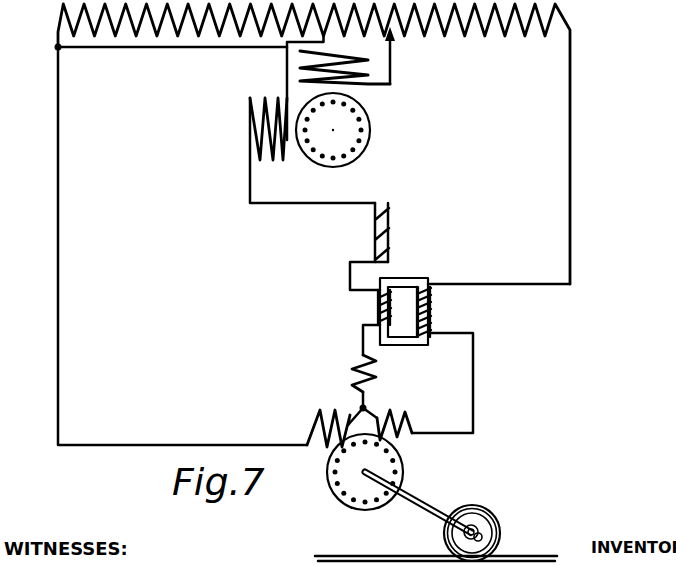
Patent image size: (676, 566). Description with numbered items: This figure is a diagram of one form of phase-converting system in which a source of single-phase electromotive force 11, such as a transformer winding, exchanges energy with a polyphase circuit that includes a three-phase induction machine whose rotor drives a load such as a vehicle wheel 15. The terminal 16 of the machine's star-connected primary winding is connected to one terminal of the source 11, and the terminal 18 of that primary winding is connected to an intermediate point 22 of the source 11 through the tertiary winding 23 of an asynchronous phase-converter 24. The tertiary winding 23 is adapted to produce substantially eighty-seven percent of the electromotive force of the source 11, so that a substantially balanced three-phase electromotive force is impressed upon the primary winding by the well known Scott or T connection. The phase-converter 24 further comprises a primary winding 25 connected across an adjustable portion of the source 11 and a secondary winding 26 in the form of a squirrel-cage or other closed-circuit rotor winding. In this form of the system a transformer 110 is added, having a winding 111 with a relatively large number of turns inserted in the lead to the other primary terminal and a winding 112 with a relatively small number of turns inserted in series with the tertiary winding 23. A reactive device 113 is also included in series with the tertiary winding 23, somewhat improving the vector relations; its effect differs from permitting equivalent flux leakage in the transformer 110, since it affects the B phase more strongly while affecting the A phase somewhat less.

The source of single-phase electromotive force 11 is at (493, 30).
The intermediate point 22 is at (287, 58).
The tertiary winding 23 is at (250, 137).
The asynchronous phase-converter 24 is at (348, 130).
The primary winding 25 is at (357, 71).
The secondary winding 26 is at (362, 140).
The reactive device 113 is at (389, 224).
The transformer 110 is at (416, 317).
The winding comprising a relatively large number of turns 111 is at (443, 312).
The winding comprising a relatively small number of turns 112 is at (380, 298).
The terminal 18 is at (359, 366).
The terminal 16 is at (351, 428).
The vehicle wheel 15 is at (495, 517).